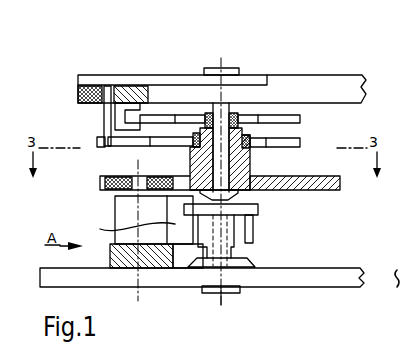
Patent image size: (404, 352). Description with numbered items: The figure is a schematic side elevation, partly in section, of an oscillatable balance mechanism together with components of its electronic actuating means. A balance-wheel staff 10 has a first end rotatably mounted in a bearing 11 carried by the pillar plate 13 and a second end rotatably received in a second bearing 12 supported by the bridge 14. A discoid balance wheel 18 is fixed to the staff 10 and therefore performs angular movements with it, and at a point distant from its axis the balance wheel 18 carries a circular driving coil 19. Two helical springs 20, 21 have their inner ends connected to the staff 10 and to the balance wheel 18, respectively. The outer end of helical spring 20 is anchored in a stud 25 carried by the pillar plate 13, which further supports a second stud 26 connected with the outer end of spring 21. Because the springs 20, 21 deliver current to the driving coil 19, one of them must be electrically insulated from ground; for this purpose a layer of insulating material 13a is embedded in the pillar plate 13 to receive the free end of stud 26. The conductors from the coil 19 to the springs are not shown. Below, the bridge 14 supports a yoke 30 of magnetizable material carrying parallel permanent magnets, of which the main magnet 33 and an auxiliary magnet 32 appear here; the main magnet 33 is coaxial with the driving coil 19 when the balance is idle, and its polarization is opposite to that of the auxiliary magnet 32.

The balance-wheel staff 10 is at (234, 105).
The bearing 11 is at (232, 71).
The second bearing 12 is at (234, 294).
The pillar plate 13 is at (316, 82).
The layer of insulating material 13a is at (81, 101).
The bridge 14 is at (312, 280).
The balance wheel 18 is at (319, 187).
The driving coil 19 is at (117, 176).
The helical spring 20 is at (157, 117).
The helical spring 21 is at (168, 139).
The stud 25 is at (140, 118).
The second stud 26 is at (102, 118).
The yoke 30 is at (158, 262).
The auxiliary magnet 32 is at (100, 229).
The main magnet 33 is at (117, 209).